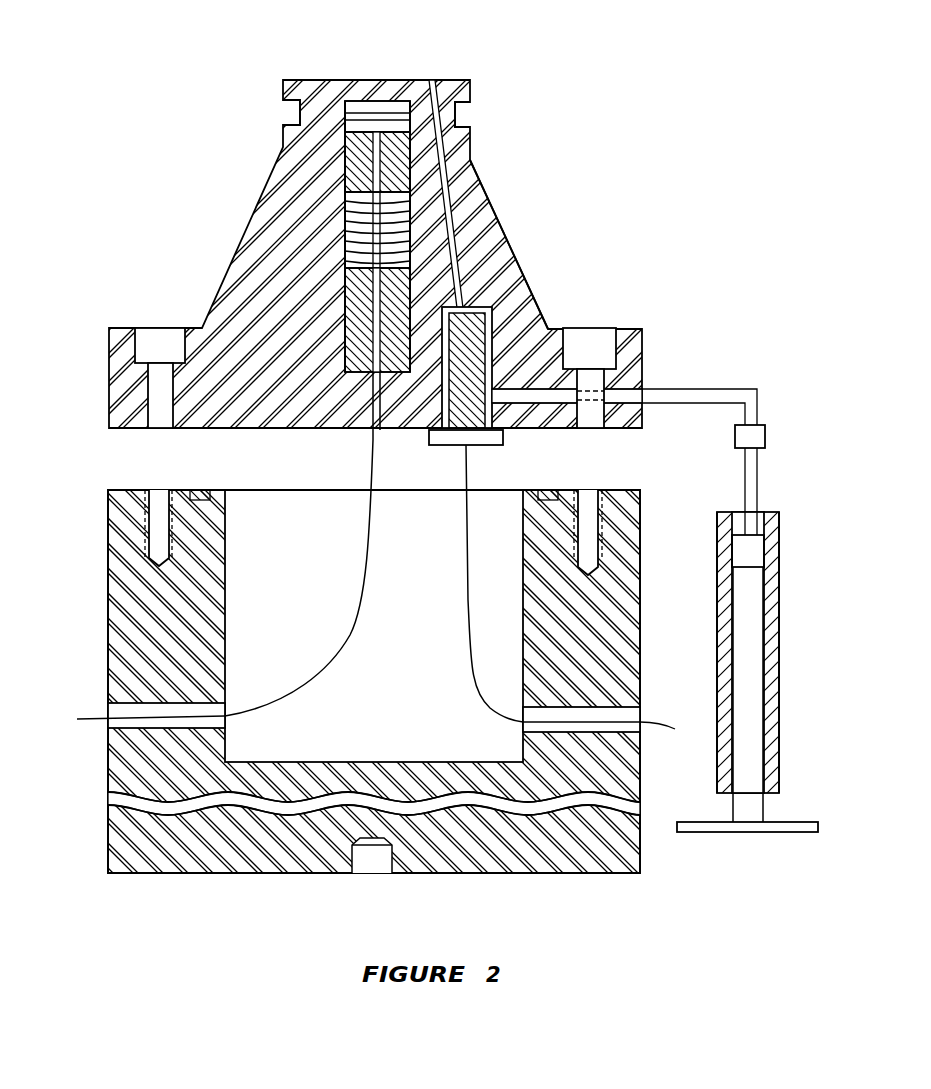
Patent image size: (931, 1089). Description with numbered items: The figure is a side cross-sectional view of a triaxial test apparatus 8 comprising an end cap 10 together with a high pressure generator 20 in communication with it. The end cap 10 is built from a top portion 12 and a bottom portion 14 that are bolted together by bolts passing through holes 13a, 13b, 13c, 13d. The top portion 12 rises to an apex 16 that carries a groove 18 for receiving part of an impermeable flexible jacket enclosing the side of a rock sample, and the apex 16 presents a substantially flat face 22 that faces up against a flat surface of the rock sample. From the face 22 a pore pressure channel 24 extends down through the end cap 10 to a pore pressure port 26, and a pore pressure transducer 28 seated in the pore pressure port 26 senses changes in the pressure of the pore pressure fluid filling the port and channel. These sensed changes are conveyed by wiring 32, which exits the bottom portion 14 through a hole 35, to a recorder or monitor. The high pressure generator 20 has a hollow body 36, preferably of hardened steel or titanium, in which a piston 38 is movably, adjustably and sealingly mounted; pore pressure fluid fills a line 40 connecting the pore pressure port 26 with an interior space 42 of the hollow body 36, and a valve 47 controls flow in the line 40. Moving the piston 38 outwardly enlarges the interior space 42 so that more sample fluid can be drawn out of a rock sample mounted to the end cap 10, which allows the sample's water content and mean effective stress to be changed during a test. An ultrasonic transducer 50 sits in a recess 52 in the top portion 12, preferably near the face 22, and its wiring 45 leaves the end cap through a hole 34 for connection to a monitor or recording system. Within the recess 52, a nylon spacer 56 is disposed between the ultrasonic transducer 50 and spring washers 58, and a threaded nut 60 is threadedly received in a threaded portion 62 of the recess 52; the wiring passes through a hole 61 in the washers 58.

The test apparatus 8 is at (108, 585).
The end cap 10 is at (520, 270).
The top portion 12 is at (478, 178).
The hole 13a is at (148, 390).
The hole 13b is at (158, 489).
The hole 13c is at (580, 355).
The hole 13d is at (580, 498).
The bottom portion 14 is at (630, 490).
The apex 16 is at (283, 78).
The groove 18 is at (458, 115).
The high pressure generator 20 is at (755, 520).
The face 22 is at (372, 80).
The pore pressure channel 24 is at (460, 212).
The pore pressure port 26 is at (540, 285).
The pore pressure transducer 28 is at (470, 355).
The wiring 32 is at (468, 475).
The hole 34 is at (108, 722).
The hole 35 is at (615, 710).
The hollow body 36 is at (777, 630).
The piston 38 is at (752, 718).
The line 40 is at (685, 388).
The interior space 42 is at (748, 550).
The wiring 45 is at (80, 718).
The valve 47 is at (765, 437).
The ultrasonic transducer 50 is at (345, 115).
The recess 52 is at (345, 208).
The nylon spacer 56 is at (345, 160).
The spring washers 58 is at (347, 222).
The threaded nut 60 is at (290, 430).
The hole 61 is at (345, 238).
The threaded portion 62 is at (362, 430).